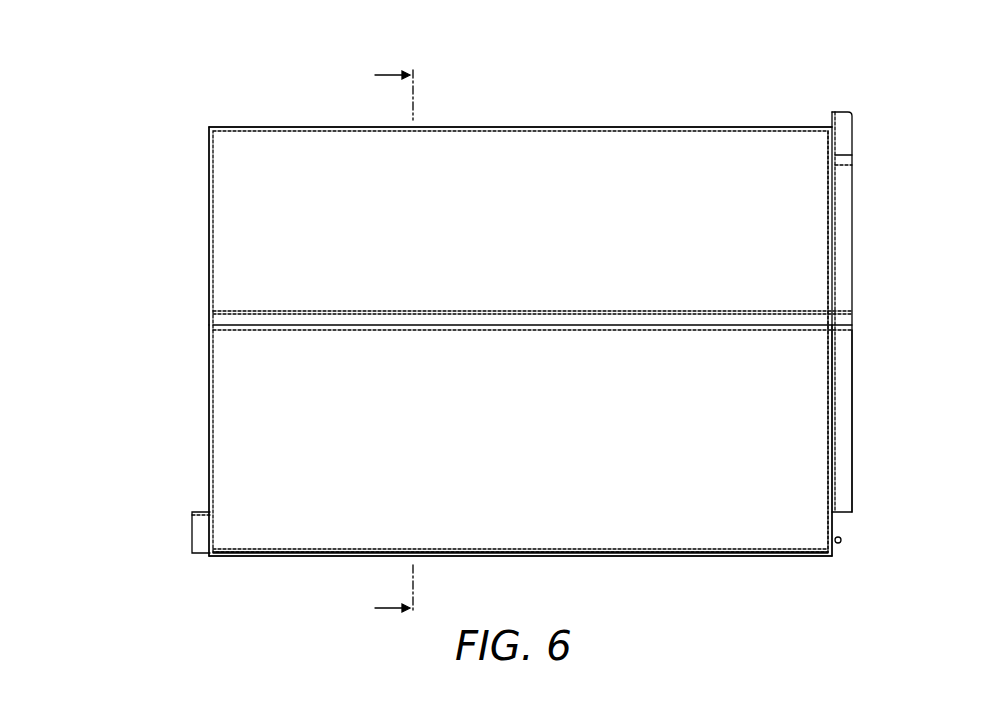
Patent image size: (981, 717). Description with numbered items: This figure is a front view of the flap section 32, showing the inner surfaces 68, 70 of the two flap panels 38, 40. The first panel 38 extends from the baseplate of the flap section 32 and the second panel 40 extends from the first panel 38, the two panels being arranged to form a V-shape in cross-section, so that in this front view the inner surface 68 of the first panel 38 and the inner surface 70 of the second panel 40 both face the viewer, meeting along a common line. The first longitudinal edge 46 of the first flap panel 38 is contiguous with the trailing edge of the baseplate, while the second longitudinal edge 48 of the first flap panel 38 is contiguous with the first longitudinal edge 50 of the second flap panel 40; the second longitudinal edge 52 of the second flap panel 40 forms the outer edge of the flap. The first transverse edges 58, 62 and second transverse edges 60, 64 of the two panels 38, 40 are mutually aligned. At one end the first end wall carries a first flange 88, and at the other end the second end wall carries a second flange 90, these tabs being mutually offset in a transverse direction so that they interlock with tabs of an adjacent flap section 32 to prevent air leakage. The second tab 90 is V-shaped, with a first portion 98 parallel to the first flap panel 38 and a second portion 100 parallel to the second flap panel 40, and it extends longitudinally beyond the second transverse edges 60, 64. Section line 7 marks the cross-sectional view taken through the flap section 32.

The flap section 32 is at (142, 78).
The first panel 38 is at (668, 526).
The second panel 40 is at (602, 168).
The first longitudinal edge 46 is at (275, 553).
The second longitudinal edge 48 is at (398, 330).
The first longitudinal edge 50 is at (325, 310).
The second longitudinal edge 52 is at (503, 125).
The first transverse edge 58 is at (209, 437).
The second transverse edge 60 is at (841, 540).
The first transverse edge 62 is at (209, 222).
The second transverse edge 64 is at (832, 213).
The inner surface 68 is at (595, 507).
The inner surface 70 is at (733, 148).
The first flange 88 is at (200, 522).
The second flange 90 is at (845, 388).
The first portion 98 is at (845, 455).
The second portion 100 is at (845, 280).
The section line 7- 7 is at (396, 342).